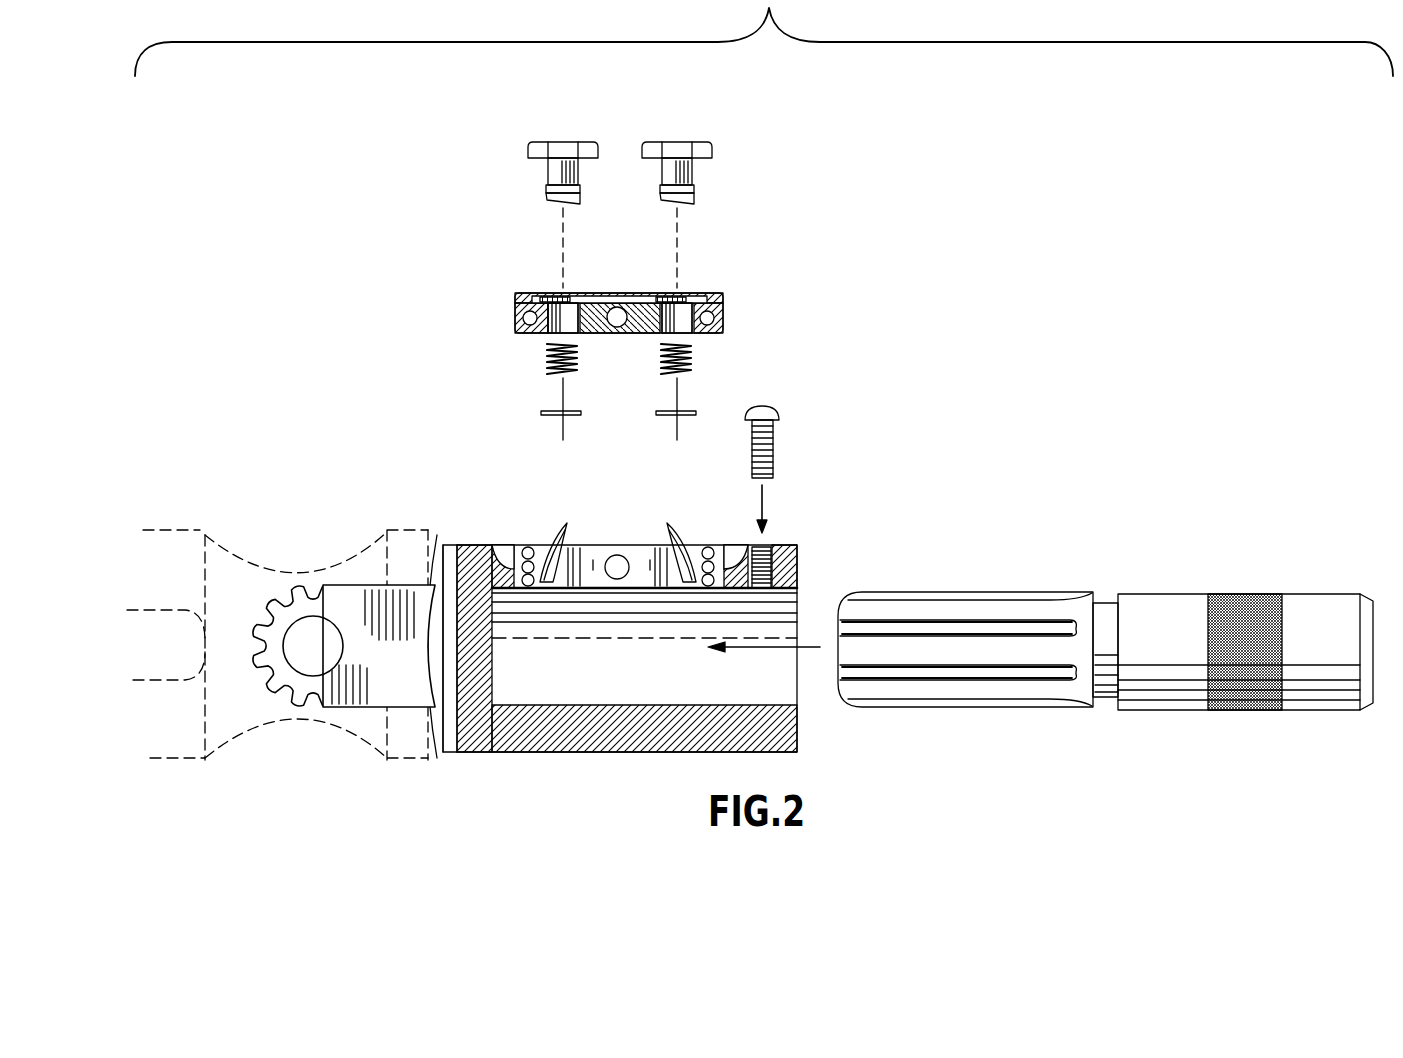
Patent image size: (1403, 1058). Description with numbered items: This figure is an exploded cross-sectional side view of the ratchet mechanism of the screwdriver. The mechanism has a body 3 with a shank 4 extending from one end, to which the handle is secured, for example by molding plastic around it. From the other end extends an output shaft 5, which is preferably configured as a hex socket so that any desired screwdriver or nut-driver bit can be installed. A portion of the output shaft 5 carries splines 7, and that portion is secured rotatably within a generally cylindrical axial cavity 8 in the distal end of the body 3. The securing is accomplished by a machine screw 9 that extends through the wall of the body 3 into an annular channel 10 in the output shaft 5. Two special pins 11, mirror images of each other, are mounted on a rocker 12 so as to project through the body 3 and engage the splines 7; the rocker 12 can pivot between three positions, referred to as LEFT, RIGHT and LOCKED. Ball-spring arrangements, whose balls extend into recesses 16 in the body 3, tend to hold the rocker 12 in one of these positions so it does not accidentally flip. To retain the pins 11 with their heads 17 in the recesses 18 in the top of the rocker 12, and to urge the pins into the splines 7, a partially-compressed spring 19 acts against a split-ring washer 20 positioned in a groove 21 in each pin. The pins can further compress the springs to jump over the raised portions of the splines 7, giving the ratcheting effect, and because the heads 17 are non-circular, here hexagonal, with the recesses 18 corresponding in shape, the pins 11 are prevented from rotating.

The body 3 is at (470, 548).
The shank 4 is at (334, 588).
The output shaft 5 is at (1160, 604).
The splines 7 is at (955, 625).
The axial cavity 8 is at (774, 637).
The machine screw 9 is at (779, 413).
The annular channel 10 is at (1102, 598).
The pin 11 is at (548, 172).
The rocker 12 is at (606, 300).
The recesses 16 is at (569, 524).
The heads 17 is at (558, 142).
The recesses 18 is at (540, 300).
The spring 19 is at (691, 352).
The split-ring washer 20 is at (541, 413).
The groove 21 is at (548, 196).